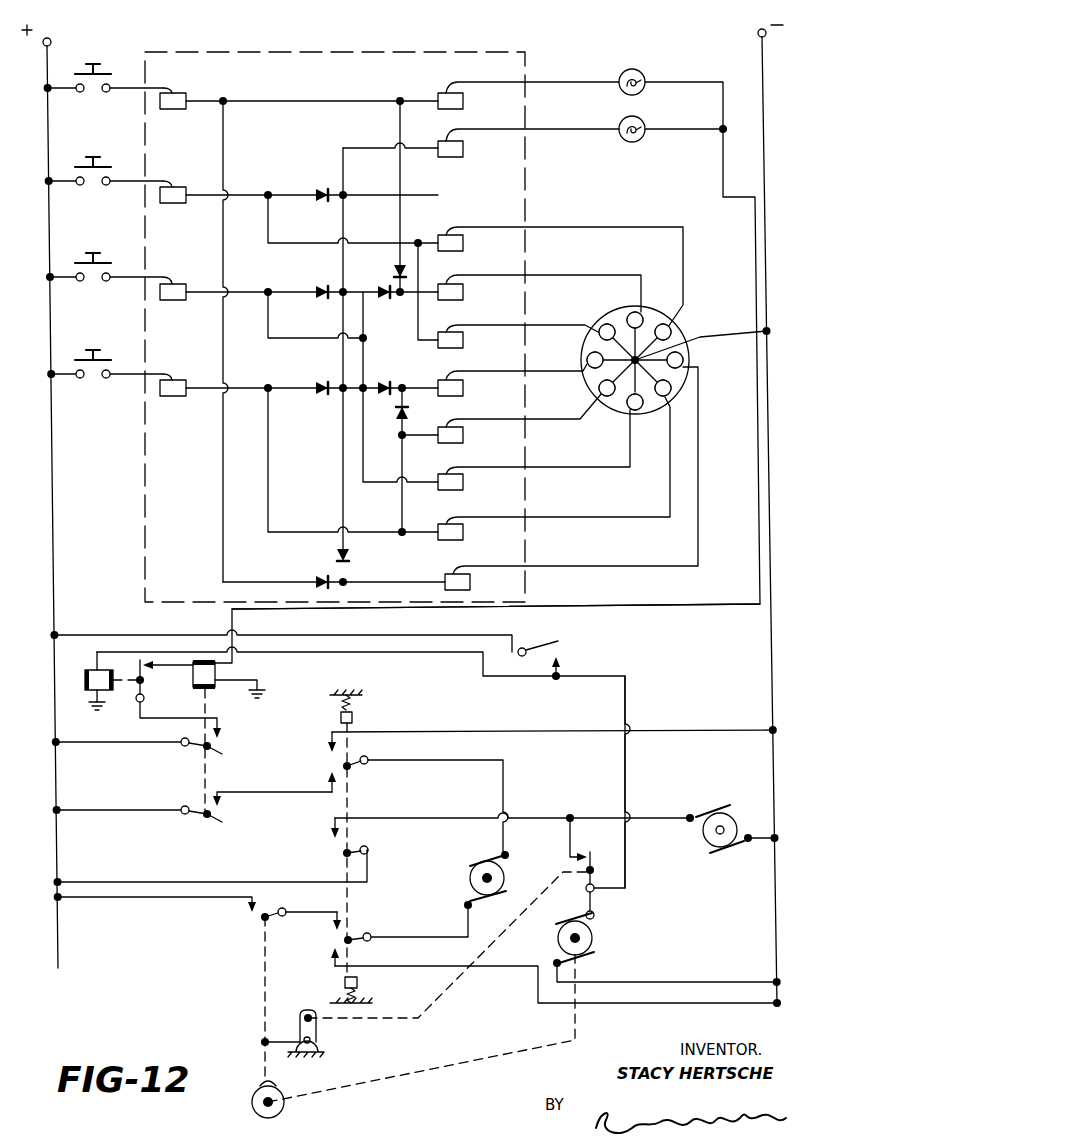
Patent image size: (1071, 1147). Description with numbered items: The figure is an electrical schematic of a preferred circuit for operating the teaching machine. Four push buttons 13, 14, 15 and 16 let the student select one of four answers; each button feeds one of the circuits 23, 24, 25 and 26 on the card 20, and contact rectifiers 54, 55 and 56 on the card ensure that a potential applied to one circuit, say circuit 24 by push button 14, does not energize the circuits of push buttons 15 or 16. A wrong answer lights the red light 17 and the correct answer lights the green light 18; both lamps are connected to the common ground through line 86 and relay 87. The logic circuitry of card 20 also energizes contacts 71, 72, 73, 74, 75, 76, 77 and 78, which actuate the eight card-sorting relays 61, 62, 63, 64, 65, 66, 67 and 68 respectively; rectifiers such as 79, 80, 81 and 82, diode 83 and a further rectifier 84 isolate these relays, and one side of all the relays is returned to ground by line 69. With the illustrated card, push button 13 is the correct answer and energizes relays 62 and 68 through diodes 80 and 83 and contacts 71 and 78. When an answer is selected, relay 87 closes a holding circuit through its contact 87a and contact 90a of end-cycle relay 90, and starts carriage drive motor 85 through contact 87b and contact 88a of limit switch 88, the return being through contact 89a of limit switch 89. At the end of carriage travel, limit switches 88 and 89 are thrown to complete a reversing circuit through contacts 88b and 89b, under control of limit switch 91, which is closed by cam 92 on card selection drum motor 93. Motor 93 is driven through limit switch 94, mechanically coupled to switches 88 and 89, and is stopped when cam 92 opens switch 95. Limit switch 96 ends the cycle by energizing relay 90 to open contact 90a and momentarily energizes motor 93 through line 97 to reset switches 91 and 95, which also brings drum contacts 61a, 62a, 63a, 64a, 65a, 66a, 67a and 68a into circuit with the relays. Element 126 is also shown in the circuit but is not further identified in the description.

The push button 13 is at (120, 50).
The push button 14 is at (120, 143).
The push button 15 is at (120, 239).
The push button 16 is at (120, 336).
The red light 17 is at (643, 120).
The green light 18 is at (634, 70).
The card 20 is at (270, 58).
The relay coil 23 is at (172, 109).
The circuit 24 is at (172, 203).
The relay coil 25 is at (172, 300).
The relay coil 26 is at (172, 396).
The contact rectifier 54 is at (322, 186).
The contact rectifier 55 is at (322, 284).
The contact rectifier 56 is at (322, 380).
The relay 61 is at (680, 326).
The contact 61a is at (676, 318).
The relay 62 is at (640, 305).
The contact 62a is at (636, 310).
The relay 63 is at (614, 322).
The contact 63a is at (600, 322).
The relay 64 is at (590, 350).
The contact 64a is at (584, 360).
The relay 65 is at (598, 390).
The contact 65a is at (606, 398).
The relay 66 is at (628, 412).
The contact 66a is at (648, 412).
The relay 67 is at (660, 398).
The contact 67a is at (670, 394).
The relay 68 is at (686, 355).
The contact 68a is at (690, 364).
The line 69 is at (746, 324).
The contact 71 is at (463, 247).
The contact 72 is at (463, 298).
The contact 73 is at (463, 346).
The contact 74 is at (463, 394).
The contact 75 is at (463, 441).
The contact 76 is at (463, 488).
The contact 77 is at (463, 538).
The contact 78 is at (450, 572).
The rectifier 79 is at (382, 284).
The rectifier 80 is at (396, 262).
The rectifier 81 is at (390, 378).
The rectifier 82 is at (410, 412).
The diode 83 is at (318, 578).
The diode 84 is at (350, 556).
The carriage drive motor 85 is at (506, 878).
The line 86 is at (334, 612).
The relay 87 is at (192, 684).
The contact 87a is at (222, 754).
The contact 87b is at (222, 822).
The limit switch 88 is at (350, 770).
The contact 88a is at (326, 778).
The contact 88b is at (326, 750).
The limit switch 89 is at (352, 944).
The contact 89a is at (333, 964).
The contact 89b is at (332, 928).
The end-cycle relay 90 is at (90, 672).
The contact 90a is at (138, 690).
The limit switch 91 is at (258, 922).
The cam 92 is at (252, 1110).
The card selection drum motor 93 is at (594, 944).
The limit switch 94 is at (326, 864).
The switch 95 is at (592, 852).
The limit switch 96 is at (550, 642).
The line 97 is at (634, 706).
The motor 126 is at (704, 845).